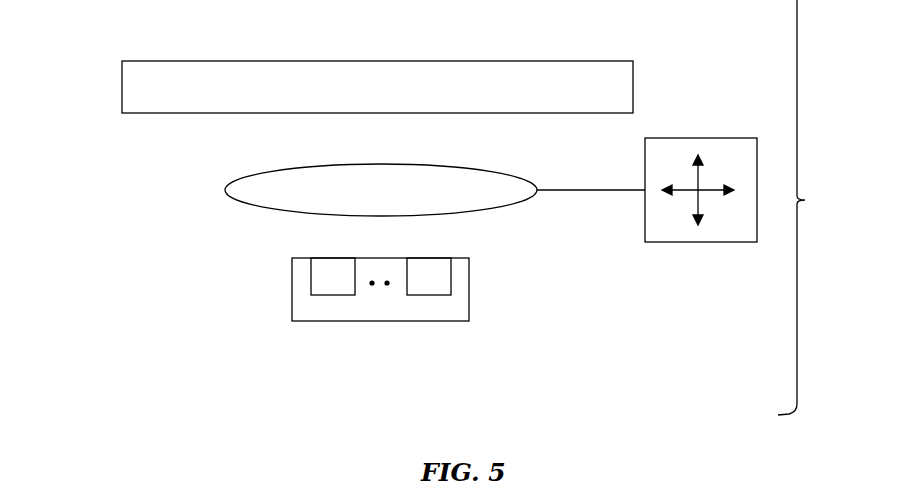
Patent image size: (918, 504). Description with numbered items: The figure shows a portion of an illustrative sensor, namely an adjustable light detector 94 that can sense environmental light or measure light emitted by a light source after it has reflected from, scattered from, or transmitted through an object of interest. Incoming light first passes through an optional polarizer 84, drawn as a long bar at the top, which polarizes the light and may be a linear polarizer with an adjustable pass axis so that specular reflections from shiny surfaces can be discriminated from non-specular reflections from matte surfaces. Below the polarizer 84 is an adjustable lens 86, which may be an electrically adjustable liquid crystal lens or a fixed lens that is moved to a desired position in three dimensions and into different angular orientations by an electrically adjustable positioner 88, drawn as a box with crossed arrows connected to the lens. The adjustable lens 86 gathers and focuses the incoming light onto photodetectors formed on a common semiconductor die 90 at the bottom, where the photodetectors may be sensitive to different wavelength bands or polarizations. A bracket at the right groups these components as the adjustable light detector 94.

The polarizer 84 is at (128, 87).
The adjustable lens 86 is at (225, 187).
The positioner 88 is at (702, 243).
The die 90 is at (386, 322).
The adjustable light detector 94 is at (815, 207).